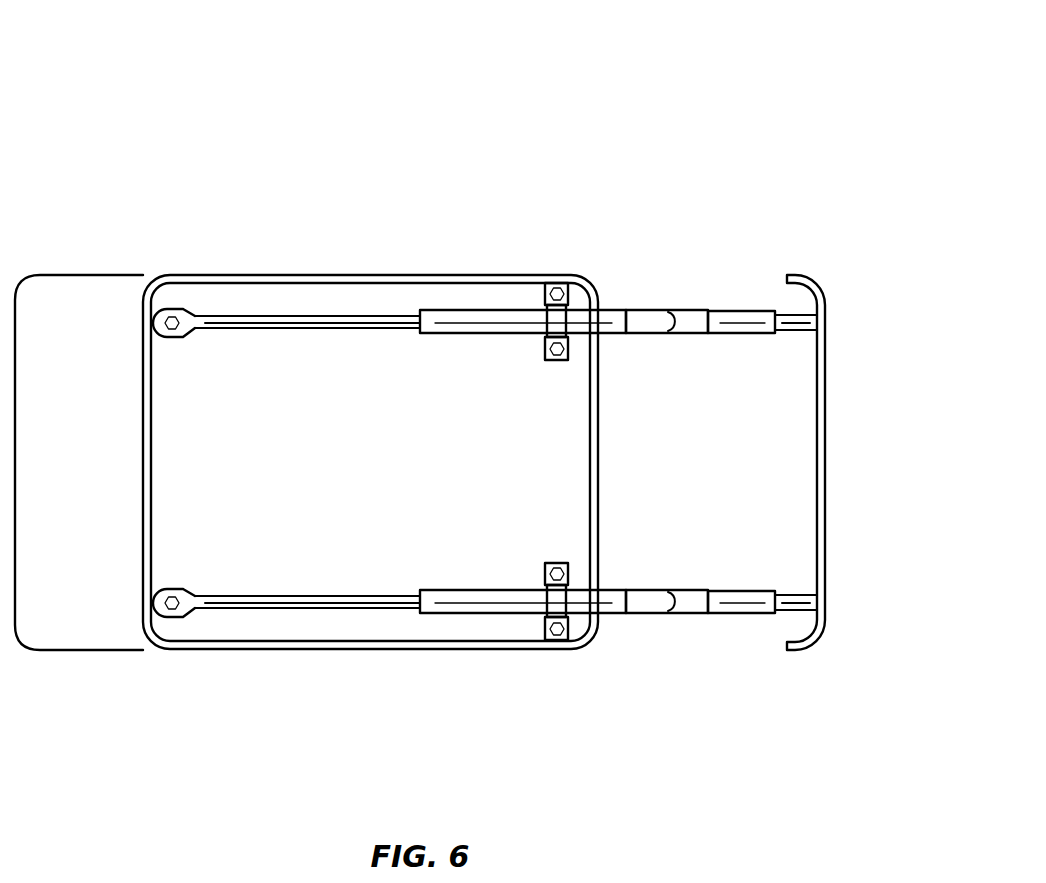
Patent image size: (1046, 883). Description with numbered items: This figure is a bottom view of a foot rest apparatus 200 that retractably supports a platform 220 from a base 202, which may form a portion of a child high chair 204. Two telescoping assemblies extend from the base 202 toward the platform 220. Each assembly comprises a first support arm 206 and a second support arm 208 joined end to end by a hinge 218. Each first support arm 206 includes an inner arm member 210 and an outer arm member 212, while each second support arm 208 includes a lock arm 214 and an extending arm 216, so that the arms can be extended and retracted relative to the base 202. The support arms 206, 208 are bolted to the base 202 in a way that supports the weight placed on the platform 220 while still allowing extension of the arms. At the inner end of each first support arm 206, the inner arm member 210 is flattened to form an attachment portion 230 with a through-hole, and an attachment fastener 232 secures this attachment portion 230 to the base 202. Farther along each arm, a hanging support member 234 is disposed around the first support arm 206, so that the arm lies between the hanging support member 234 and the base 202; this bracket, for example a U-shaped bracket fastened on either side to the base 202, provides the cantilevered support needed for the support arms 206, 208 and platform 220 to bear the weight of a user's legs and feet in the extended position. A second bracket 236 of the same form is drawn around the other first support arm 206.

The extendable rack assembly 200 is at (599, 98).
The first frame 202 is at (278, 283).
The end plate 204 is at (73, 275).
The inner tube 206 is at (392, 316).
The second frame 208 is at (737, 311).
The threaded rod 210 is at (340, 316).
The outer sleeve 212 is at (485, 310).
The extension rod 214 is at (737, 323).
The end rod 216 is at (793, 323).
The coupling 218 is at (668, 312).
The frame side member 220 is at (825, 472).
The eye bolt 230 is at (178, 310).
The eye bolt 232 is at (172, 607).
The mounting bracket 234 is at (562, 605).
The mounting bracket 236 is at (558, 294).